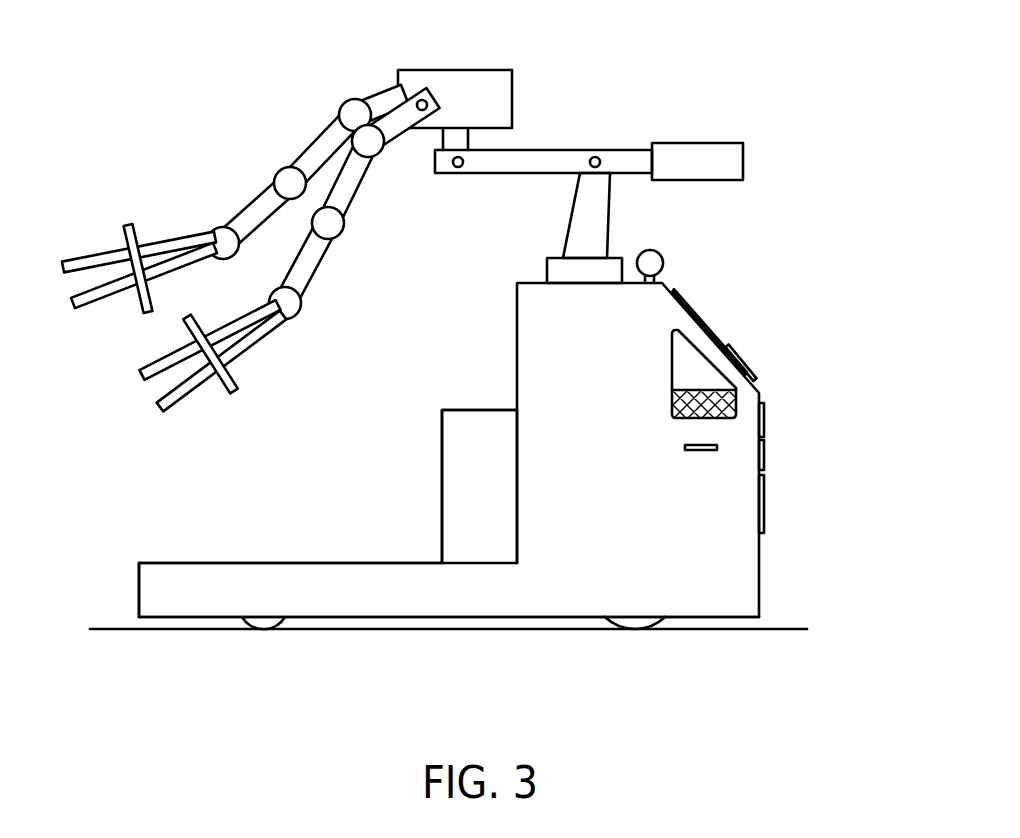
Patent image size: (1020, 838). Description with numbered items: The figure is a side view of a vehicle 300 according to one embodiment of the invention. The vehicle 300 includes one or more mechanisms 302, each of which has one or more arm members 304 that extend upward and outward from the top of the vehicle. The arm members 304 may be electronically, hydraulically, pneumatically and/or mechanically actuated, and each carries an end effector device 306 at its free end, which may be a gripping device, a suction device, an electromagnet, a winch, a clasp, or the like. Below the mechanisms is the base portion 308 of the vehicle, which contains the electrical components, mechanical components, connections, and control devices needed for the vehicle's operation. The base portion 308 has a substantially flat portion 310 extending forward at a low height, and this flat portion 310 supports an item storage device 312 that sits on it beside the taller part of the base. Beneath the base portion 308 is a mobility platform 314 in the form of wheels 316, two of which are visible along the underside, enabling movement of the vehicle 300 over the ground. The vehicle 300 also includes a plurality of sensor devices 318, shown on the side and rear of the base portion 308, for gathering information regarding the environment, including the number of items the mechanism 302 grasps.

The vehicle 300 is at (227, 38).
The mechanism 302 is at (239, 248).
The arm member 304 is at (335, 255).
The end effector device 306 is at (130, 372).
The base portion 308 is at (760, 568).
The substantially flat portion 310 is at (312, 563).
The item storage device 312 is at (503, 492).
The mobility platform 314 is at (708, 648).
The wheels 316 is at (263, 630).
The sensor device 318 is at (764, 413).